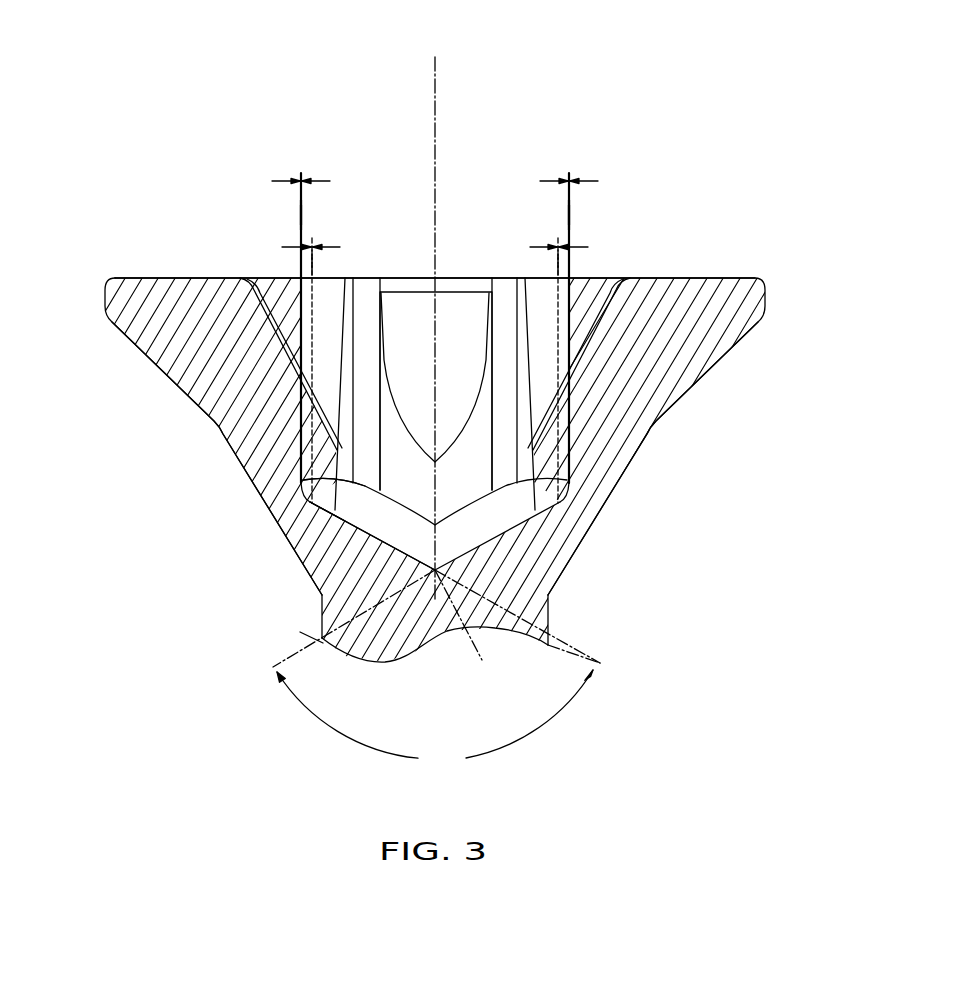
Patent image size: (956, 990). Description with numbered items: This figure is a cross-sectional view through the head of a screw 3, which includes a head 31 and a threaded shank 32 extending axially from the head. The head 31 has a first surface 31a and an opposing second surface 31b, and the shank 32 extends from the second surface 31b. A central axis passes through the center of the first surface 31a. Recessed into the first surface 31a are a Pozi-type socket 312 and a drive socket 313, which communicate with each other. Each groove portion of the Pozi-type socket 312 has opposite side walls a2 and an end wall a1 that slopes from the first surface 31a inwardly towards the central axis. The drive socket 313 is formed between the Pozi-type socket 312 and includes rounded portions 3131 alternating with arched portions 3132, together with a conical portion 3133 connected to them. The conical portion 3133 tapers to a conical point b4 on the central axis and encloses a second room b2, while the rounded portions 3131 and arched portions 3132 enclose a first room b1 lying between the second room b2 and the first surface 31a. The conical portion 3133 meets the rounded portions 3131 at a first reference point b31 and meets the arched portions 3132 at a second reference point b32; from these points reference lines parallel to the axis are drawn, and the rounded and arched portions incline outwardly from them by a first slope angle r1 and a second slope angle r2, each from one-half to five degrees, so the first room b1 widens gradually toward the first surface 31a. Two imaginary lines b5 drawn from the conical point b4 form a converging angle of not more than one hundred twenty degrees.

The screw 3 is at (255, 128).
The head 31 is at (703, 278).
The first surface 31a is at (183, 278).
The second surface 31b is at (727, 350).
The Pozi-type socket 312 is at (447, 278).
The drive socket 313 is at (302, 470).
The rounded portion 3131 is at (303, 430).
The arched portion 3132 is at (467, 478).
The conical portion 3133 is at (306, 500).
The threaded shank 32 is at (322, 618).
The end wall a1 is at (415, 310).
The side walls a2 is at (488, 292).
The first room b1 is at (498, 435).
The second room b2 is at (487, 527).
The first reference point b31 is at (343, 478).
The second reference point b32 is at (340, 510).
The conical point b4 is at (471, 635).
The imaginary lines b5 is at (441, 629).
The first slope angle r1 is at (442, 178).
The second slope angle r2 is at (442, 244).